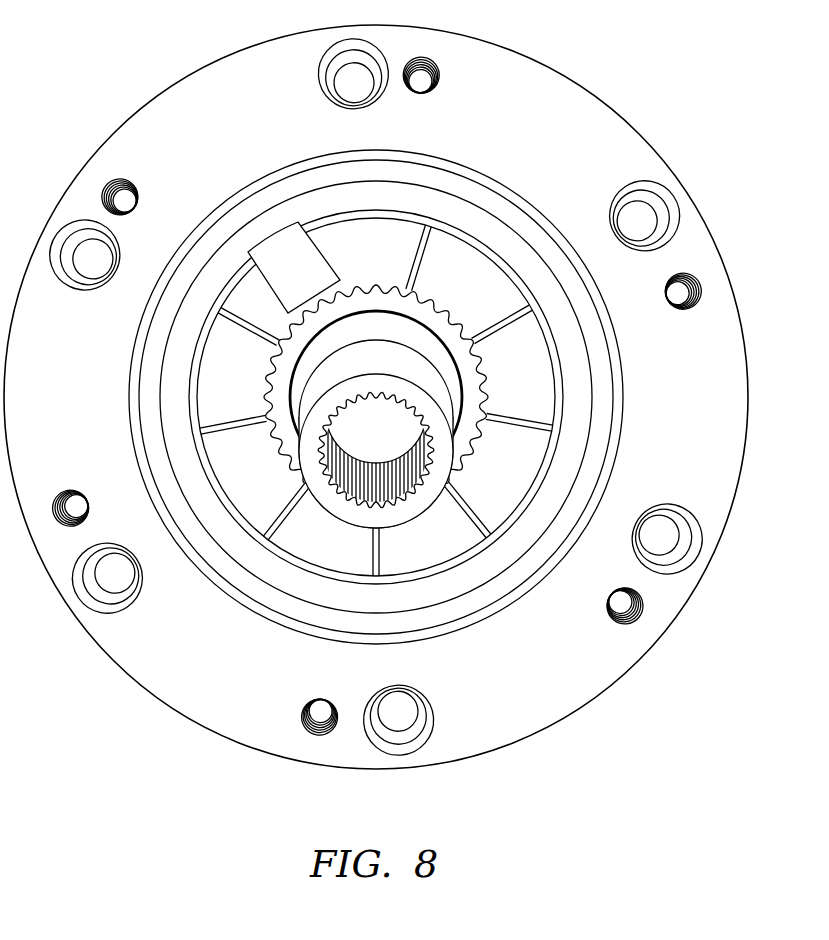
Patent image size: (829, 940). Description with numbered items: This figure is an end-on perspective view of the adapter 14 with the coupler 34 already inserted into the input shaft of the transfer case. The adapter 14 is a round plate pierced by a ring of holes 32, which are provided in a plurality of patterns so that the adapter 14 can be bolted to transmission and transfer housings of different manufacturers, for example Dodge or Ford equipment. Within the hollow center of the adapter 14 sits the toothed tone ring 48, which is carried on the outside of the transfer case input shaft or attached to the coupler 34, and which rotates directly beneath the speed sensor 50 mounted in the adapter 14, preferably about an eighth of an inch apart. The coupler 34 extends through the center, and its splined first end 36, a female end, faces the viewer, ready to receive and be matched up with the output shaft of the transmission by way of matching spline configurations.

The adapter 14 is at (672, 423).
The holes 32 is at (436, 82).
The coupler 34 is at (372, 517).
The first end 36 is at (328, 502).
The tone ring 48 is at (312, 452).
The speed sensor 50 is at (282, 264).